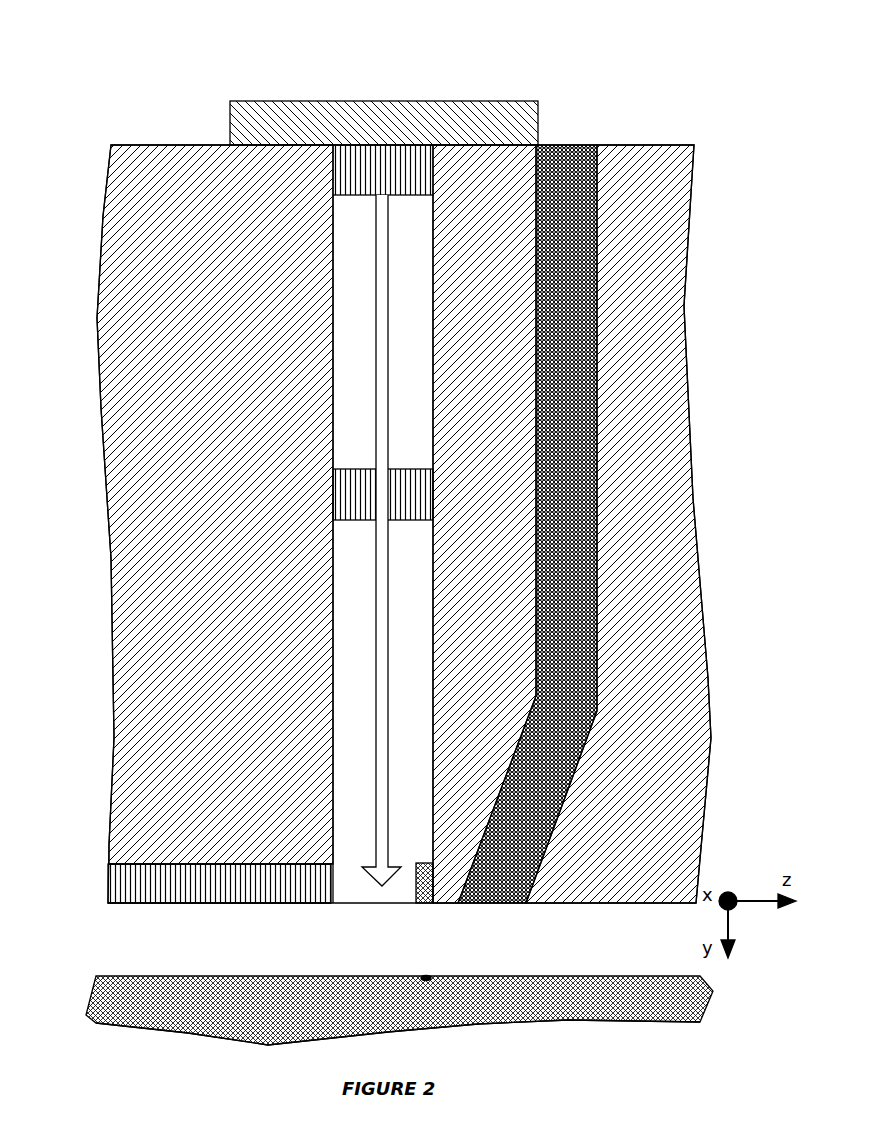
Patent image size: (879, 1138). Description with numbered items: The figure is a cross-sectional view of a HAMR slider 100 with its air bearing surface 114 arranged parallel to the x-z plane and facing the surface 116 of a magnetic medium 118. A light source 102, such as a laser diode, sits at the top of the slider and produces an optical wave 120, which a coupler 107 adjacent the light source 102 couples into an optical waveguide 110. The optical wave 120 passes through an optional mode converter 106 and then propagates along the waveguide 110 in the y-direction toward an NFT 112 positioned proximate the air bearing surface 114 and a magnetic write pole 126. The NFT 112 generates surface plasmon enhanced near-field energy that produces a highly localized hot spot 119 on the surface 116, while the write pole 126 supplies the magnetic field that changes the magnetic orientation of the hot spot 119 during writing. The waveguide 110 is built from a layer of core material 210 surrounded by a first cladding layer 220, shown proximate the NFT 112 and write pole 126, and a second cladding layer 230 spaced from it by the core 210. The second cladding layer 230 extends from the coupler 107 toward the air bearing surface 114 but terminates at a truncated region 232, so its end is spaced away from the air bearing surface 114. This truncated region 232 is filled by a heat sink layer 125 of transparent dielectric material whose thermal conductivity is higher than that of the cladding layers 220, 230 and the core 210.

The HAMR slider 100 is at (668, 108).
The light source 102 is at (245, 92).
The mode converter 106 is at (383, 494).
The coupler 107 is at (383, 170).
The optical waveguide 110 is at (247, 240).
The NFT 112 is at (414, 896).
The air bearing surface 114 is at (115, 902).
The surface of the magnetic medium 116 is at (644, 968).
The magnetic medium 118 is at (652, 1014).
The hot spot 119 is at (413, 973).
The optical wave 120 is at (368, 534).
The heat sink layer 125 is at (225, 898).
The magnetic write pole 126 is at (527, 524).
The waveguide core 210 is at (417, 686).
The first cladding layer 220 is at (572, 524).
The second cladding layer 230 is at (215, 504).
The truncated region 232 is at (153, 850).